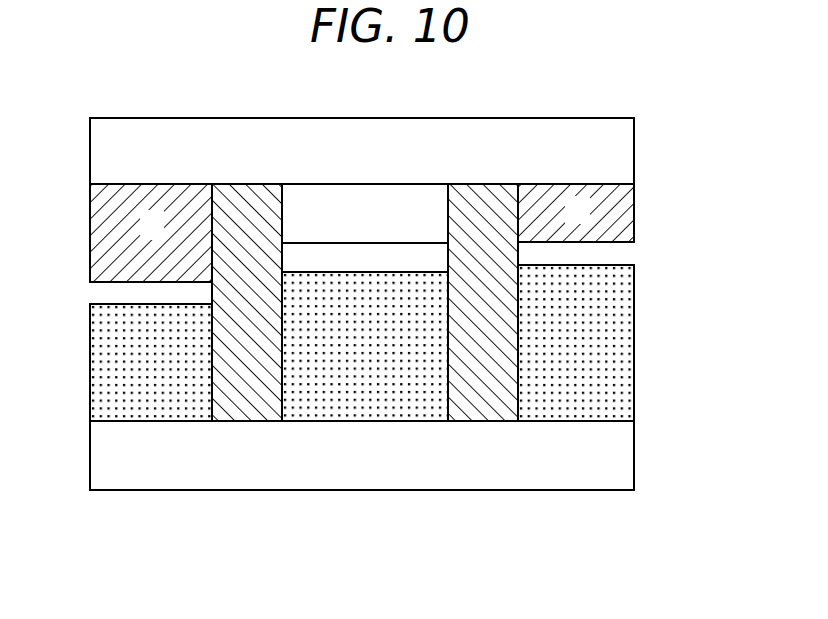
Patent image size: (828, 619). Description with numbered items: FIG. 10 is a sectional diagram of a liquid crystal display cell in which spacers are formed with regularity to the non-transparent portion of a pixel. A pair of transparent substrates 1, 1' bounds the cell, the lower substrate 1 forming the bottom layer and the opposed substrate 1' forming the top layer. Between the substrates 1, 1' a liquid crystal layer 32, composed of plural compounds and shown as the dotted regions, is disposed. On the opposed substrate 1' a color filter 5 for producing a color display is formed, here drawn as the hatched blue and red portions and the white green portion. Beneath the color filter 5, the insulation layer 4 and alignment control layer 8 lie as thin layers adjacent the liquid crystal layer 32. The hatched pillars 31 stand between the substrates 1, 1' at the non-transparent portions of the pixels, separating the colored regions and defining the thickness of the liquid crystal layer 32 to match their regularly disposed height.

The transparent substrate 1 is at (382, 453).
The opposed transparent substrate 1' is at (386, 138).
The insulation layer 4 is at (324, 258).
The alignment control layer 8 is at (365, 257).
The color filter 5 is at (628, 198).
The partition wall 31 is at (244, 408).
The liquid crystal layer 32 is at (625, 320).